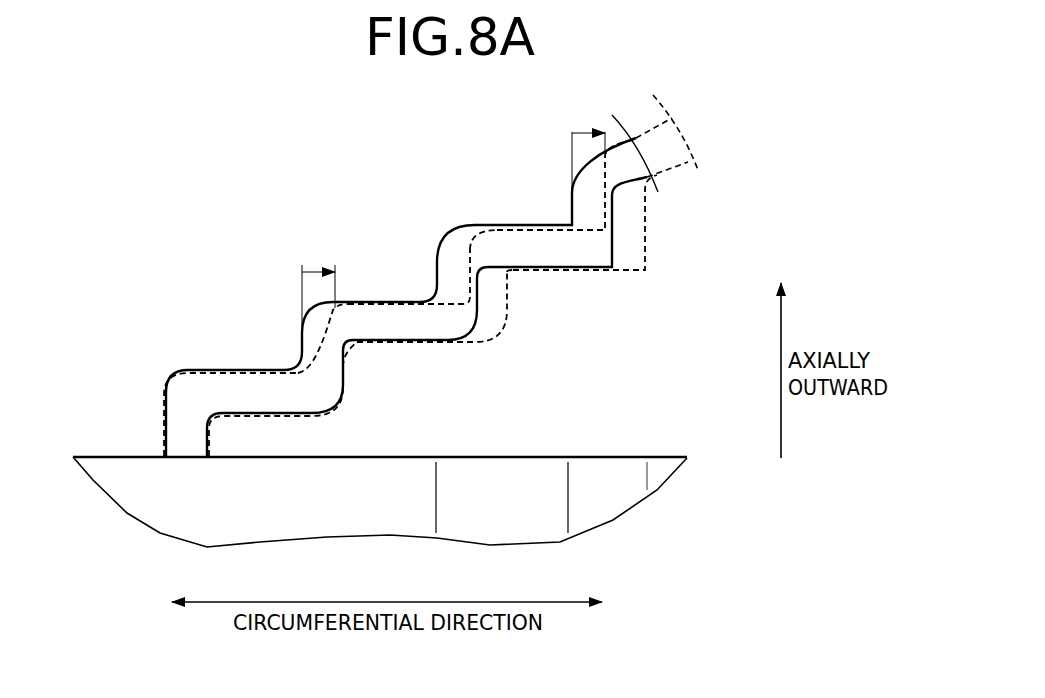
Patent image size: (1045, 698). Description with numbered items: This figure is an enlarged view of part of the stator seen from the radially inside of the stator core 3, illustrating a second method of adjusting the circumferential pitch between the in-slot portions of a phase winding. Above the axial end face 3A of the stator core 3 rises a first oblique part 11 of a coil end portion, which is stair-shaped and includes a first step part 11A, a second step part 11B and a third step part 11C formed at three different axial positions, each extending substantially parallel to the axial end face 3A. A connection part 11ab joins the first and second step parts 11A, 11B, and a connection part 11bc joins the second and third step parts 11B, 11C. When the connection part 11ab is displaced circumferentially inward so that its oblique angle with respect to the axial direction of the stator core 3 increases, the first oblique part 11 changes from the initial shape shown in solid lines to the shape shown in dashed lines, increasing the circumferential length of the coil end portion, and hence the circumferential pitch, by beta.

The first oblique part 11 is at (431, 275).
The first step part 11A is at (249, 385).
The second step part 11B is at (397, 310).
The third step part 11C is at (513, 233).
The connection part 11ab is at (348, 362).
The connection part 11bc is at (478, 293).
The axial end face 3A is at (592, 457).
The stator core 3 is at (620, 520).